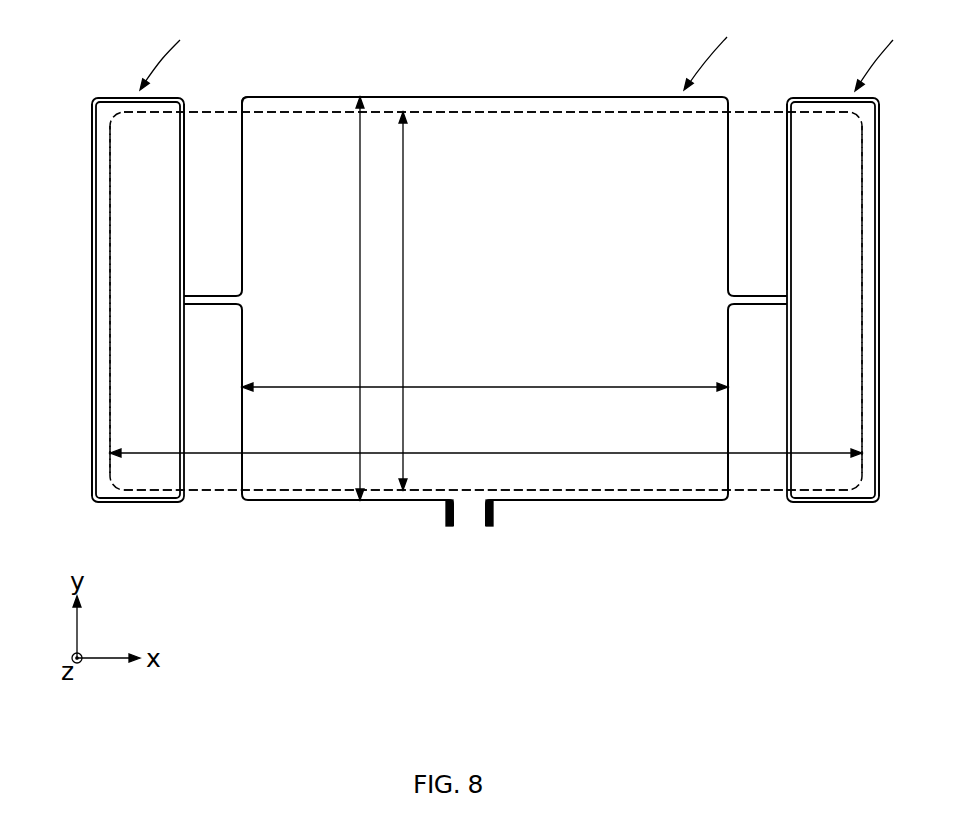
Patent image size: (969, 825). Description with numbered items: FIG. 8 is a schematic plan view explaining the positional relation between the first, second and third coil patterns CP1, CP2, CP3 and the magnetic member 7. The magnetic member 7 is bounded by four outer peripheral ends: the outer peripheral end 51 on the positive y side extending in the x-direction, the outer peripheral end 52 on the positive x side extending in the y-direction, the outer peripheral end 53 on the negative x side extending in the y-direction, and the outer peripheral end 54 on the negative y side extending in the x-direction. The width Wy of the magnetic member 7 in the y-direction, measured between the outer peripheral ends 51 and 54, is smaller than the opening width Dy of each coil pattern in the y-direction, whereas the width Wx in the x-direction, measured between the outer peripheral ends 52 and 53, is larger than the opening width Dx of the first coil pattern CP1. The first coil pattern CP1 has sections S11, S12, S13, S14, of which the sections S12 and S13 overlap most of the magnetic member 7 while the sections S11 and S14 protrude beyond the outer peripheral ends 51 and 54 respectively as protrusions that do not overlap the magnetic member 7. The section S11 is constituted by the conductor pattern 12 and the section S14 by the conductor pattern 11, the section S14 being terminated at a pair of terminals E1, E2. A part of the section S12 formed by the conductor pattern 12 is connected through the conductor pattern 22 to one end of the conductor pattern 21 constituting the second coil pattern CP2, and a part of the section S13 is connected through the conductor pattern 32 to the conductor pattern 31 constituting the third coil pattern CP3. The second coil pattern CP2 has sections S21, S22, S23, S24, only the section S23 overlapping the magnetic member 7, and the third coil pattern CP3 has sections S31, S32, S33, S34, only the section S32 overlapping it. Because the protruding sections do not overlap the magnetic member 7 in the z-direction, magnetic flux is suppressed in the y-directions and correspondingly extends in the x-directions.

The magnetic member 7 is at (752, 472).
The conductor pattern 11 is at (244, 418).
The conductor pattern 12 is at (245, 215).
The conductor pattern 21 is at (797, 378).
The conductor pattern 22 is at (790, 298).
The conductor pattern 31 is at (177, 378).
The conductor pattern 32 is at (178, 297).
The outer peripheral end 51 is at (615, 111).
The outer peripheral end 52 is at (878, 300).
The outer peripheral end 53 is at (108, 339).
The outer peripheral end 54 is at (640, 493).
The section S11 is at (460, 96).
The section S12 is at (726, 346).
The section S13 is at (244, 343).
The section S14 is at (377, 503).
The section S21 is at (829, 97).
The section S22 is at (876, 148).
The section S23 is at (789, 208).
The section S24 is at (832, 503).
The section S31 is at (120, 97).
The section S32 is at (180, 240).
The section S33 is at (97, 216).
The section S34 is at (135, 503).
The terminal E1 is at (489, 528).
The terminal E2 is at (450, 528).
The first coil pattern CP1 is at (716, 50).
The second coil pattern CP2 is at (885, 53).
The third coil pattern CP3 is at (171, 52).
The opening width Dx is at (485, 375).
The opening width Dy is at (342, 298).
The width Wx is at (486, 441).
The width Wy is at (424, 301).